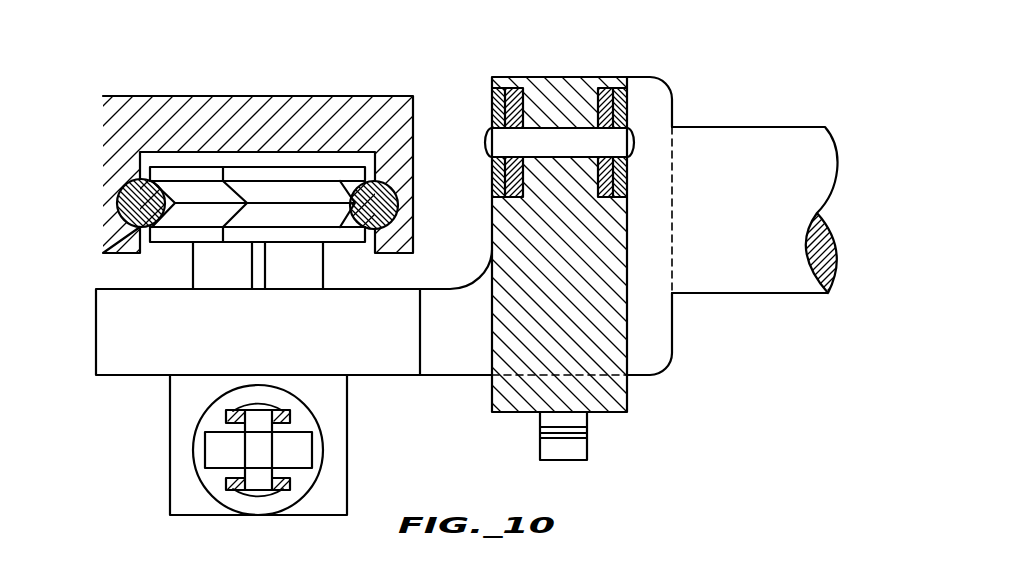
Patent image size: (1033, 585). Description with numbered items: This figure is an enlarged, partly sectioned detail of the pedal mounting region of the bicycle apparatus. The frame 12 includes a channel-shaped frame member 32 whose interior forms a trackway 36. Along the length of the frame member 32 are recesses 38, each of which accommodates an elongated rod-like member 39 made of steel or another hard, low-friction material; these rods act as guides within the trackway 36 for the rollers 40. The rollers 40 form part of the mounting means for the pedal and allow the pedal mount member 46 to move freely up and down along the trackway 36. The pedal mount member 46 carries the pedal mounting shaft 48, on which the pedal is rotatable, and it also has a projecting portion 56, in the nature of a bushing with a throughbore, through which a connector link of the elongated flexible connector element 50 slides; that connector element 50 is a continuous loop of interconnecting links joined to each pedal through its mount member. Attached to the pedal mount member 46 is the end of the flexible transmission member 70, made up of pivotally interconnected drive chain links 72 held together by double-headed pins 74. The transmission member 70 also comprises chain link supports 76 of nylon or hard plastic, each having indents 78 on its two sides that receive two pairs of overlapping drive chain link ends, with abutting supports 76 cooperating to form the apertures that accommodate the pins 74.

The frame 12 is at (227, 158).
The frame member 32 is at (101, 103).
The trackway 36 is at (290, 152).
The recess 38 is at (125, 193).
The rod-like member 39 is at (263, 201).
The roller 40 is at (178, 174).
The pedal mount member 46 is at (155, 366).
The pedal mounting shaft 48 is at (793, 142).
The elongated flexible connector element 50 is at (222, 456).
The projecting portion 56 is at (338, 453).
The flexible transmission member 70 is at (583, 244).
The drive chain link 72 is at (512, 97).
The double-headed pin 74 is at (553, 142).
The chain link support 76 is at (620, 348).
The indent 78 is at (507, 200).